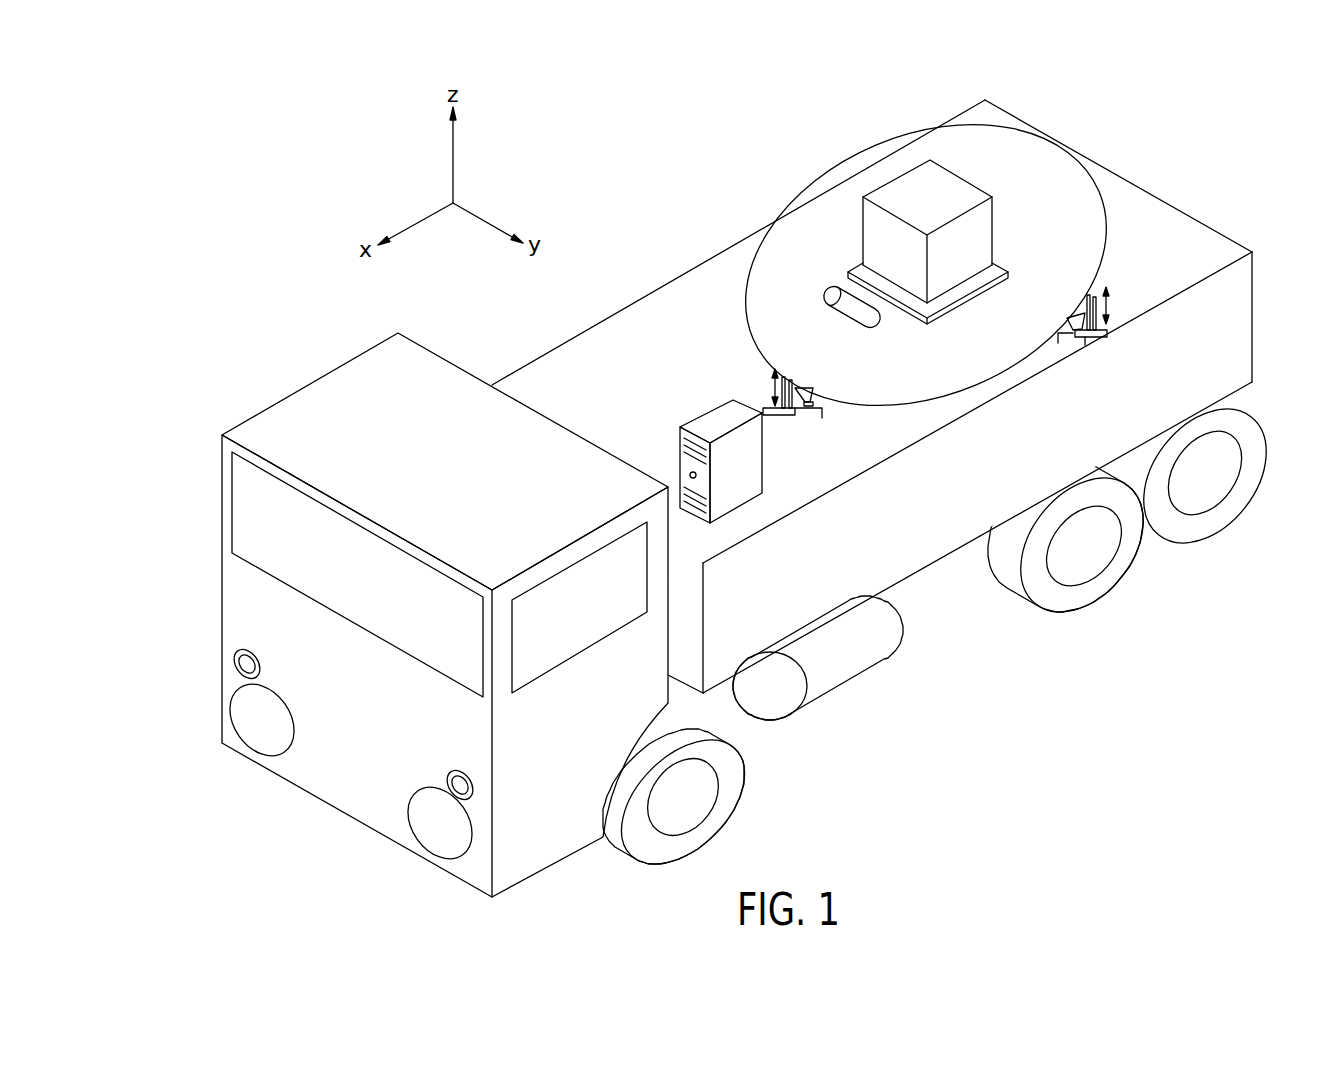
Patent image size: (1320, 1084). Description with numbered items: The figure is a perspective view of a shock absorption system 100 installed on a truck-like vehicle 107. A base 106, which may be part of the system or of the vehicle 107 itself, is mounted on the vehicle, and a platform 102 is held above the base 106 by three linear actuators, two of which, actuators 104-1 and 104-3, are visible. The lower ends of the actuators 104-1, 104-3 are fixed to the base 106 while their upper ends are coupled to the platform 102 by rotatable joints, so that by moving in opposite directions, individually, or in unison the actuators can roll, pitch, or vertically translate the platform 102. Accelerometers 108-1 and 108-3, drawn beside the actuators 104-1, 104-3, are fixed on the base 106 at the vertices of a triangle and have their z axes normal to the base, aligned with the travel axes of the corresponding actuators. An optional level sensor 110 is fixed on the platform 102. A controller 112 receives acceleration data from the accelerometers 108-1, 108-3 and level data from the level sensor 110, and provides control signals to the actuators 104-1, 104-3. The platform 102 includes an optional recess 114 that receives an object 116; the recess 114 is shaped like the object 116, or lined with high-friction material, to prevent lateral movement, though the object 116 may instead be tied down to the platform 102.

The shock absorption system 100 is at (221, 142).
The platform 102 is at (937, 328).
The actuator 104-1 is at (766, 363).
The actuator 104-3 is at (1107, 292).
The base 106 is at (832, 443).
The vehicle 107 is at (347, 383).
The accelerometer 108-1 is at (802, 393).
The accelerometer 108-3 is at (1064, 315).
The level sensor 110 is at (827, 290).
The controller 112 is at (740, 487).
The recess 114 is at (992, 338).
The object 116 is at (900, 177).